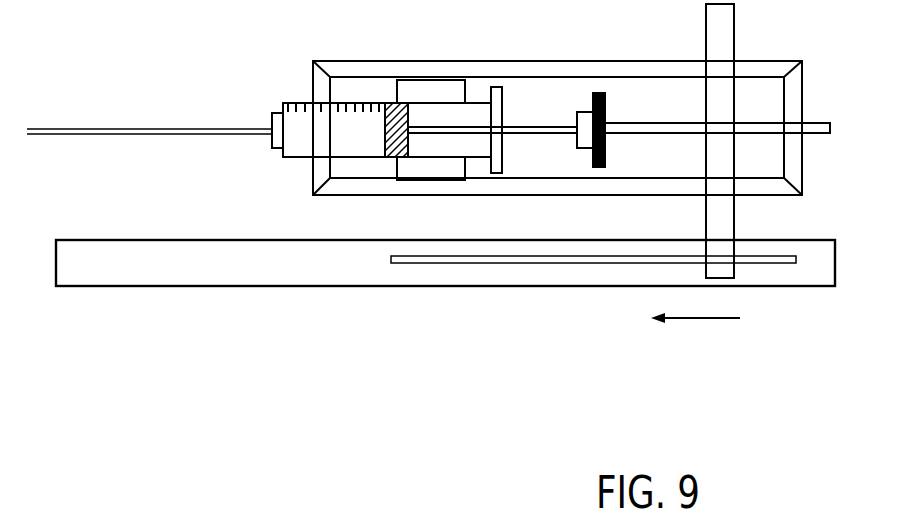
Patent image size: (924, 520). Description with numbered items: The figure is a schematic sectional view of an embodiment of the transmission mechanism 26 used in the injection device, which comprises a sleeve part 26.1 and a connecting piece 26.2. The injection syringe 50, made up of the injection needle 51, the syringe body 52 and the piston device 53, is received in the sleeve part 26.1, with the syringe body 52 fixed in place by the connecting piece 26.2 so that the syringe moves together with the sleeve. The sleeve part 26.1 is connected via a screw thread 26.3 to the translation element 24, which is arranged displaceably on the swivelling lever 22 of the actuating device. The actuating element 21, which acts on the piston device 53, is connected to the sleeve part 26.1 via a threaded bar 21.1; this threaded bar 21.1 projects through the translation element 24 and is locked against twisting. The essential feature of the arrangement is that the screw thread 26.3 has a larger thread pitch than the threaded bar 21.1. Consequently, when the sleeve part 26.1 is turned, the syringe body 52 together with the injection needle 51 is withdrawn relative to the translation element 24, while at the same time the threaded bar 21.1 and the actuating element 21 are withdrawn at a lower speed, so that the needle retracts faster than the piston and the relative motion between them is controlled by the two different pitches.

The actuating element 21 is at (605, 138).
The threaded bar 21.1 is at (780, 127).
The swivelling lever 22 is at (343, 273).
The translation element 24 is at (717, 183).
The transmission mechanism 26 is at (322, 83).
The sleeve part 26.1 is at (548, 68).
The connecting piece 26.2 is at (447, 88).
The screw thread 26.3 is at (721, 77).
The injection syringe 50 is at (375, 150).
The injection needle 51 is at (127, 133).
The syringe body 52 is at (357, 157).
The piston device 53 is at (510, 130).